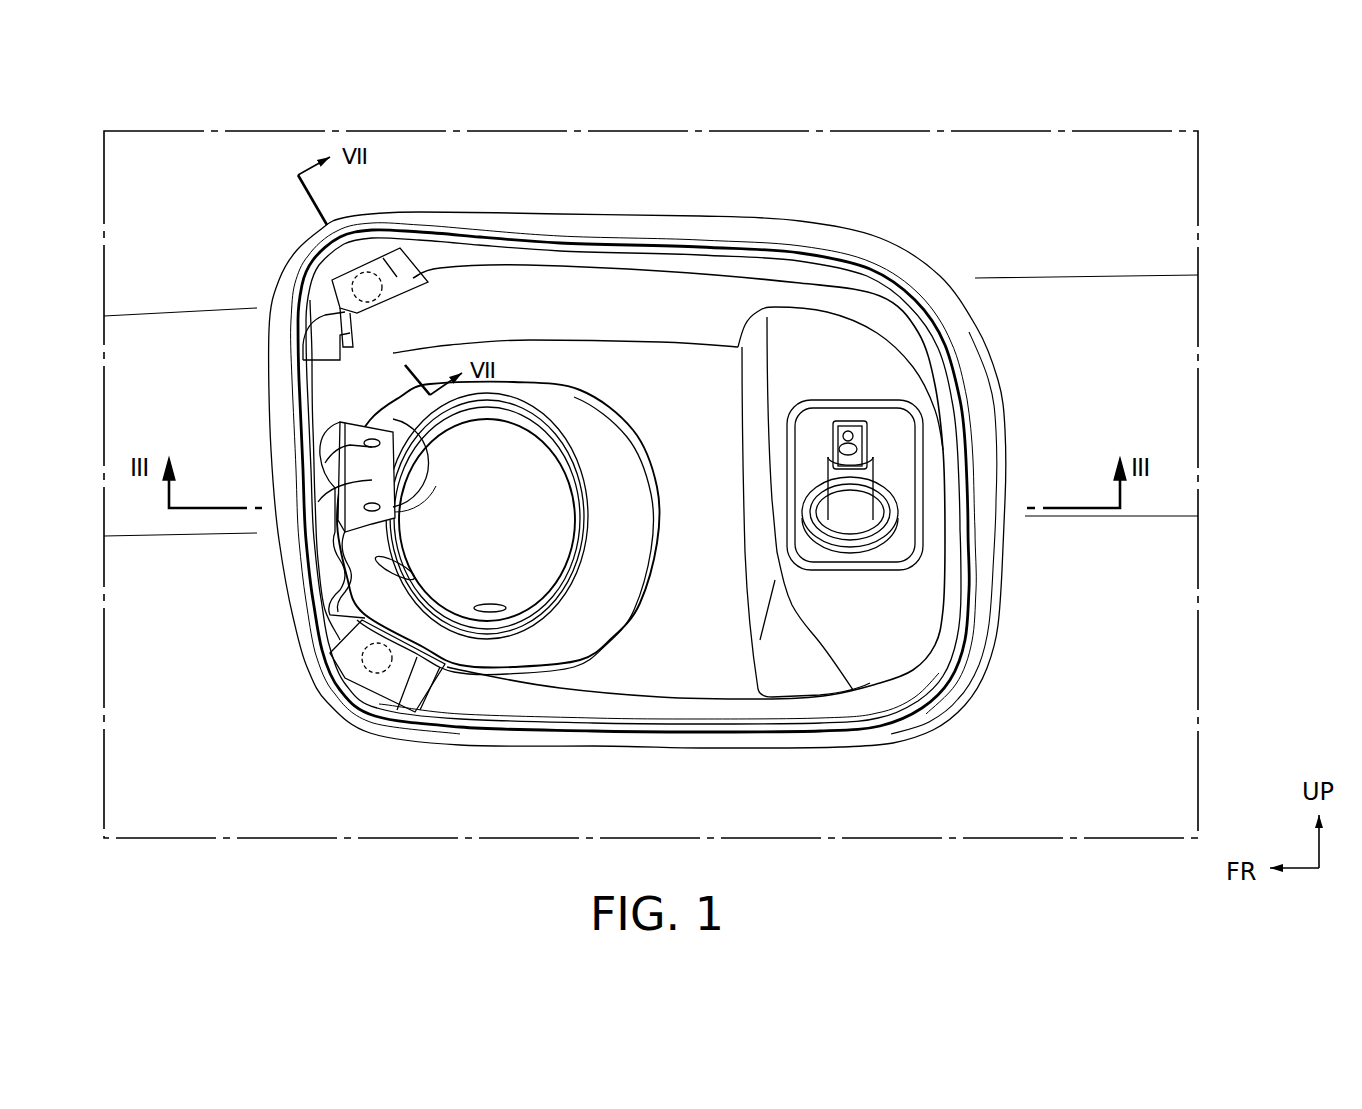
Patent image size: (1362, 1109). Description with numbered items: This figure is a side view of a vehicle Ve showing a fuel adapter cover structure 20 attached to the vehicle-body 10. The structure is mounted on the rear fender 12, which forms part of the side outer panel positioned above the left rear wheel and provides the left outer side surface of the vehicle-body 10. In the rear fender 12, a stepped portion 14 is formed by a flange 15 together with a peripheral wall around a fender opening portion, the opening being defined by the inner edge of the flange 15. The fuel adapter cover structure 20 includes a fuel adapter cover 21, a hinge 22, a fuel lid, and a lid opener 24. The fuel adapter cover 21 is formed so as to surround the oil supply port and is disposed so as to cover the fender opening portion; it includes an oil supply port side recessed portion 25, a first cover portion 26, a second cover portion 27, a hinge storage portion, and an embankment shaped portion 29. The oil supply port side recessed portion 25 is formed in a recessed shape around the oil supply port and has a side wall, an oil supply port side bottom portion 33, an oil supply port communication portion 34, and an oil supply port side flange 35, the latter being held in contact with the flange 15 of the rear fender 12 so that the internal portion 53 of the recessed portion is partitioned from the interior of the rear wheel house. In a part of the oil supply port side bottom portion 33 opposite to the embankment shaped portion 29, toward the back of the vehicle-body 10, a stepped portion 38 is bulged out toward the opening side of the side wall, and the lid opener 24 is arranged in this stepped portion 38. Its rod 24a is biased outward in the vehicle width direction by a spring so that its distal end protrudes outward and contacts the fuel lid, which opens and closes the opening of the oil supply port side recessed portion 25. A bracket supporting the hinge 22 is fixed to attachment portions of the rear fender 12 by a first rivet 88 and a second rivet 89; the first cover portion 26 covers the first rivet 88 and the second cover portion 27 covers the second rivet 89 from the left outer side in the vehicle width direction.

The vehicle Ve is at (608, 82).
The vehicle-body 10 is at (670, 118).
The rear fender 12 is at (925, 147).
The stepped portion 14 is at (990, 466).
The flange 15 is at (988, 400).
The fuel adapter cover structure 20 is at (692, 176).
The fuel adapter cover 21 is at (768, 236).
The hinge 22 is at (340, 478).
The lid opener 24 is at (902, 528).
The rod 24a is at (863, 437).
The oil supply port side recessed portion 25 is at (841, 268).
The first cover portion 26 is at (367, 280).
The second cover portion 27 is at (373, 663).
The embankment shaped portion 29 is at (310, 370).
The oil supply port side bottom portion 33 is at (706, 650).
The oil supply port communication portion 34 is at (590, 620).
The oil supply port side flange 35 is at (899, 307).
The stepped portion 38 is at (892, 622).
The internal portion 53 is at (690, 512).
The first rivet 88 is at (393, 277).
The second rivet 89 is at (360, 660).